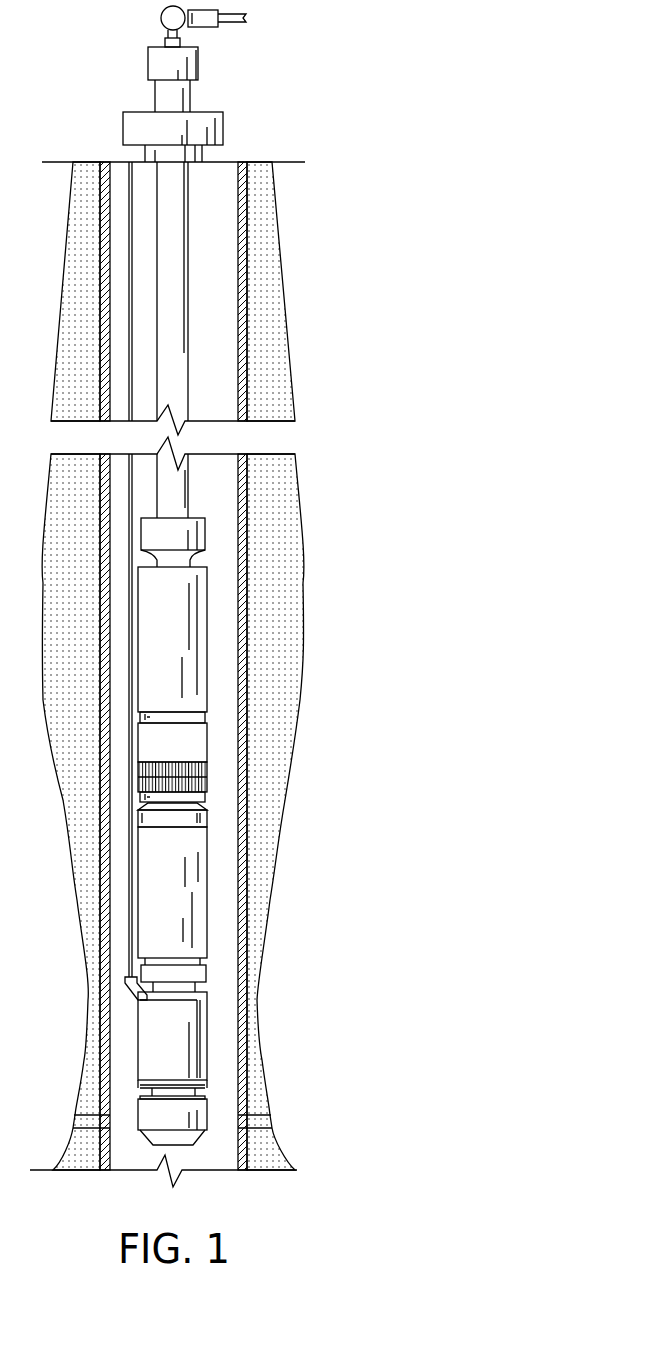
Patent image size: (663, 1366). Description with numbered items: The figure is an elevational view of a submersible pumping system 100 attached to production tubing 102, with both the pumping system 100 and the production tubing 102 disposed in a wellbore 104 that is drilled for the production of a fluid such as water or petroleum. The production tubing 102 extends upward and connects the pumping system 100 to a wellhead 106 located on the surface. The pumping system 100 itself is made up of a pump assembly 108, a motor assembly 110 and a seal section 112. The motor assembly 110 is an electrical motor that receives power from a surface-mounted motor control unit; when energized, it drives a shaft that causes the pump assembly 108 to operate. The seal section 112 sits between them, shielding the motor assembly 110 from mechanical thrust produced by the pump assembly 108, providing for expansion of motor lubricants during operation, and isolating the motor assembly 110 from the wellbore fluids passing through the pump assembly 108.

The pumping system 100 is at (345, 713).
The production tubing 102 is at (182, 202).
The wellbore 104 is at (240, 267).
The wellhead 106 is at (163, 62).
The pump assembly 108 is at (202, 680).
The motor assembly 110 is at (203, 1048).
The seal section 112 is at (220, 903).